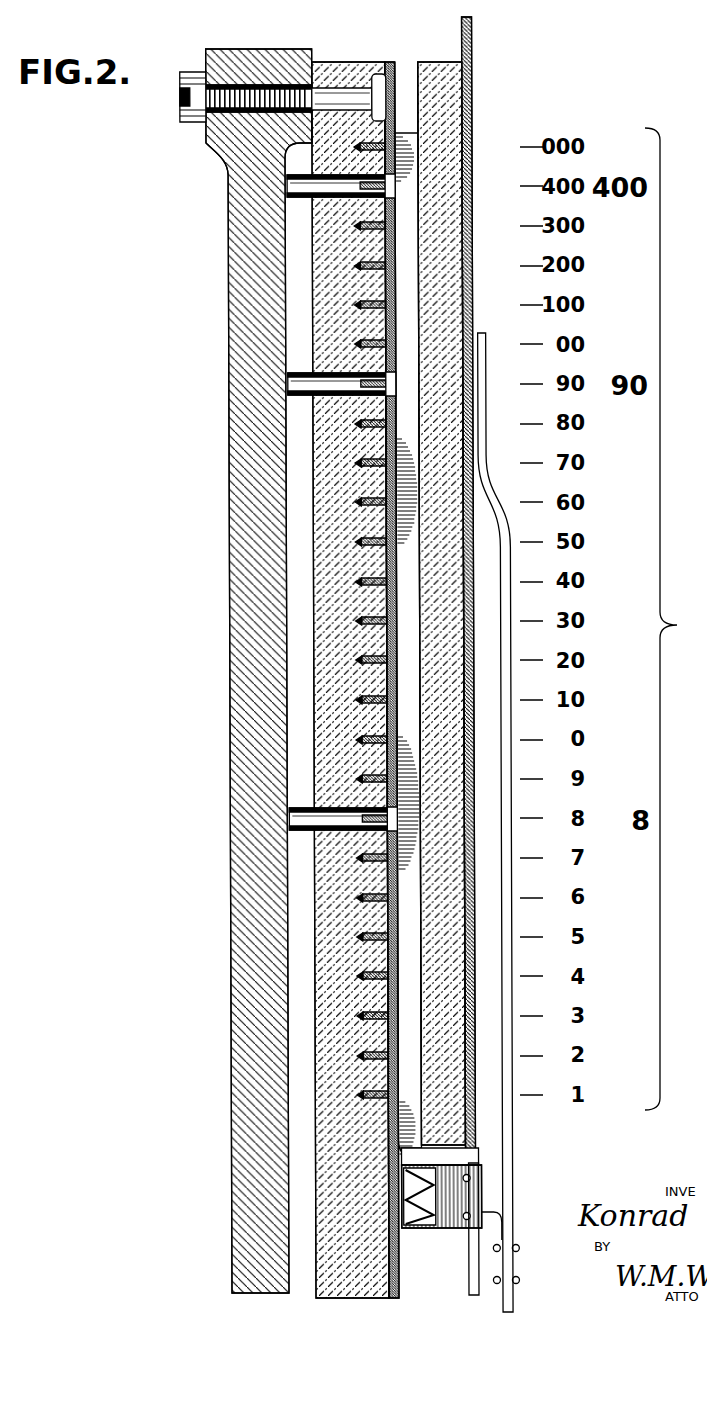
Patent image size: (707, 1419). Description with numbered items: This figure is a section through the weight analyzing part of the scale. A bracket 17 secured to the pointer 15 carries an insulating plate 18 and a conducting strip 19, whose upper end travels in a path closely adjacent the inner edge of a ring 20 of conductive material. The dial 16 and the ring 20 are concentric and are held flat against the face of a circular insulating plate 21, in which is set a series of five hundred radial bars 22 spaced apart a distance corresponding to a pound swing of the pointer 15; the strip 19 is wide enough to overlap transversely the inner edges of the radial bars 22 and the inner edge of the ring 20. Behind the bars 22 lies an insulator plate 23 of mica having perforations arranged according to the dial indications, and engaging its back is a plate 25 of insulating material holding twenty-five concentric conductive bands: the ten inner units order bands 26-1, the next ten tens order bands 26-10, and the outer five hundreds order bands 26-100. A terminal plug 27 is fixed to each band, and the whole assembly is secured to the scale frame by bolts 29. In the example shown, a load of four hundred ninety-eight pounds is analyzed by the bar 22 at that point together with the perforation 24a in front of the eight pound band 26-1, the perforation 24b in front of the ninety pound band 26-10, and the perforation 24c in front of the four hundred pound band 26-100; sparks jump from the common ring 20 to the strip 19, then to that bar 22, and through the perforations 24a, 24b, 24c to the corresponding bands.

The pointer 15 is at (478, 410).
The dial 16 is at (472, 252).
The bracket 17 is at (483, 1218).
The insulating plate 18 is at (467, 1200).
The conducting strip 19 is at (432, 1226).
The ring 20 is at (468, 1141).
The circular insulating plate 21 is at (455, 110).
The radial bars 22 is at (405, 178).
The insulator plate 23 is at (398, 1265).
The perforation 24a is at (390, 813).
The perforation 24b is at (412, 362).
The perforation 24c is at (394, 192).
The plate 25 is at (327, 322).
The units order bands 26-1 is at (362, 1095).
The tens order bands 26-10 is at (362, 660).
The hundreds order bands 26-100 is at (362, 305).
The terminal plug 27 is at (292, 833).
The bolts 29 is at (226, 114).